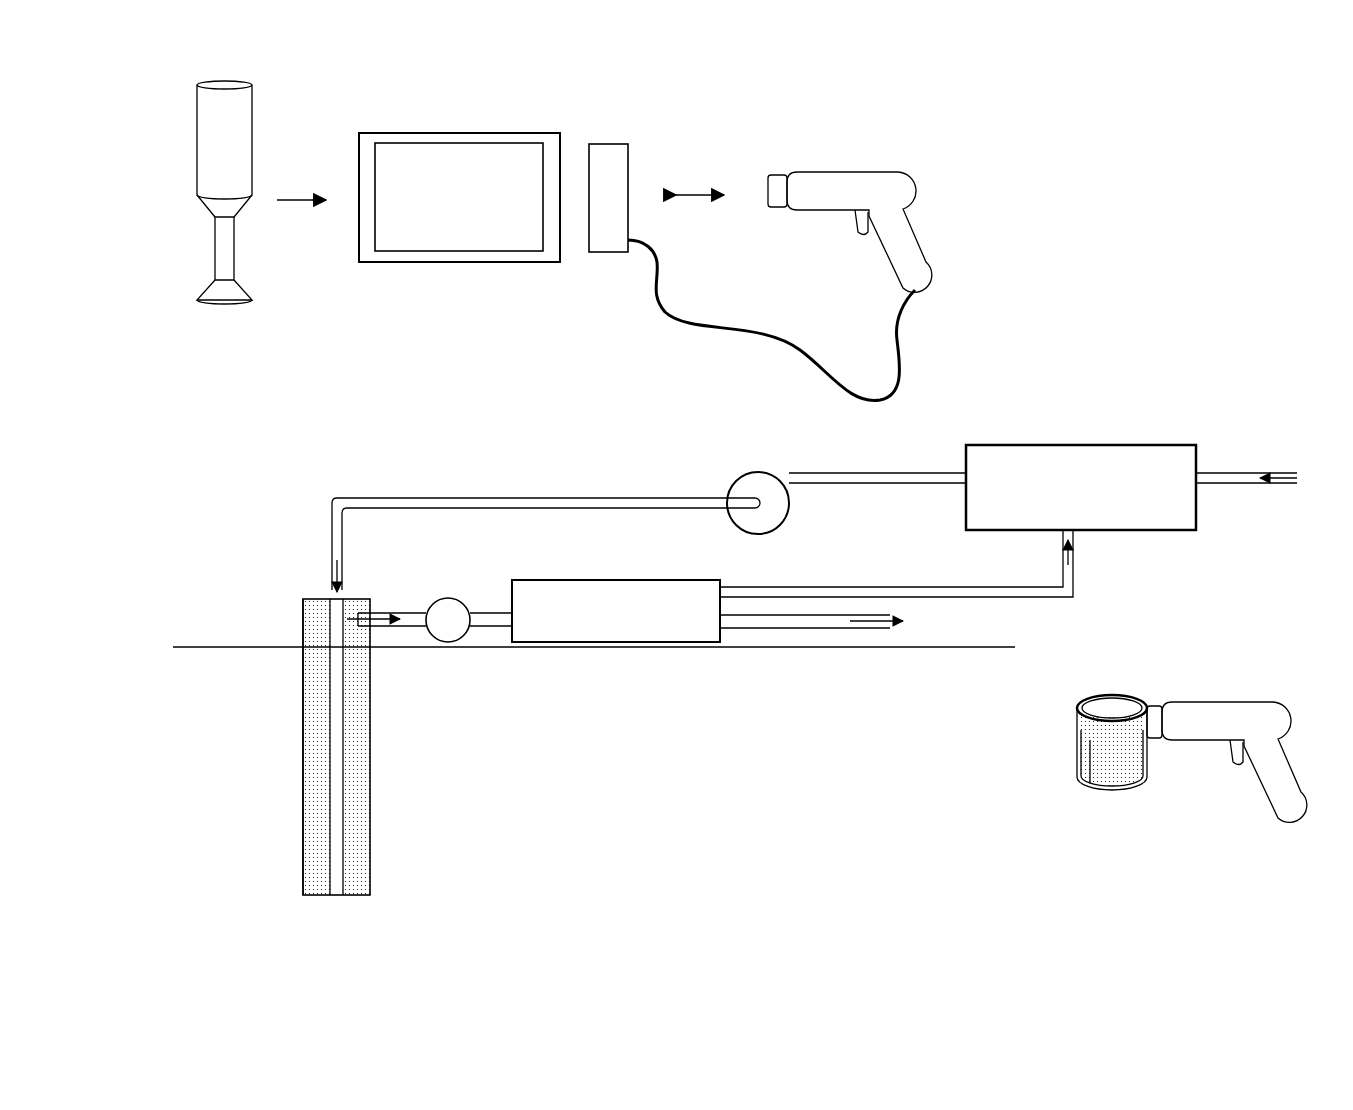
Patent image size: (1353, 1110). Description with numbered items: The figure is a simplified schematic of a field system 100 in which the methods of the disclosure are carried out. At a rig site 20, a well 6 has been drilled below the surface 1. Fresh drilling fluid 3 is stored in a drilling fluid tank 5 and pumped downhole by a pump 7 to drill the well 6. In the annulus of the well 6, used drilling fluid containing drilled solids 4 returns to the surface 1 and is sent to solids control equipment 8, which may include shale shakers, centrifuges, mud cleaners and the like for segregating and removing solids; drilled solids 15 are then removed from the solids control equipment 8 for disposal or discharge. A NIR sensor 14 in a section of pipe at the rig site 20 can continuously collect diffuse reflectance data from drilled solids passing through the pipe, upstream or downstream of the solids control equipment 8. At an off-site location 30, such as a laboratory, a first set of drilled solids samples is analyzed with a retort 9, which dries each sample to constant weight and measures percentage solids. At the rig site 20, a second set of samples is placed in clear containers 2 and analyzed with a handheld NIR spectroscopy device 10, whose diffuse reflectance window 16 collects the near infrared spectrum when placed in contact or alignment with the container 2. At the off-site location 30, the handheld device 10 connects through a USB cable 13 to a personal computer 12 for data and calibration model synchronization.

The field system 100 is at (1242, 138).
The off-site location 30 is at (406, 65).
The retort 9 is at (197, 175).
The personal computer 12 is at (531, 119).
The USB cable 13 is at (897, 345).
The handheld NIR spectroscopy device 10 is at (898, 172).
The diffuse reflectance window 16 is at (768, 190).
The rig site 20 is at (466, 457).
The pump 7 is at (750, 473).
The drilling fluid tank 5 is at (1081, 487).
The fresh drilling fluid 3 is at (1297, 478).
The solids control equipment 8 is at (616, 611).
The drilled solids 15 is at (833, 622).
The NIR sensor 14 is at (452, 598).
The surface 1 is at (196, 647).
The used drilling fluid containing drilled solids 4 is at (370, 733).
The well 6 is at (282, 781).
The clear container 2 is at (1102, 752).